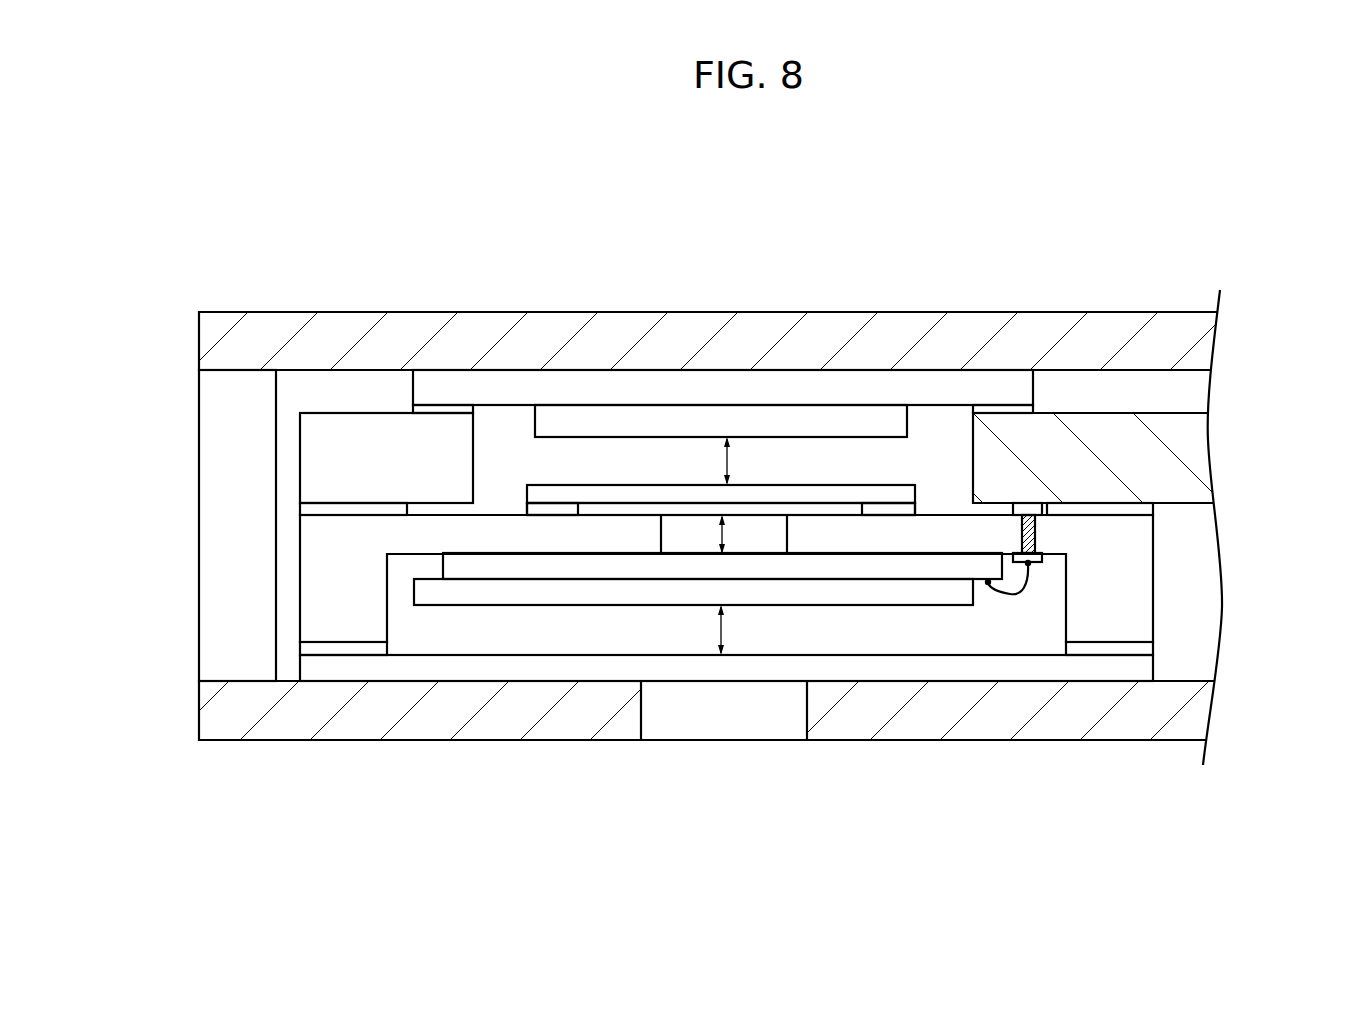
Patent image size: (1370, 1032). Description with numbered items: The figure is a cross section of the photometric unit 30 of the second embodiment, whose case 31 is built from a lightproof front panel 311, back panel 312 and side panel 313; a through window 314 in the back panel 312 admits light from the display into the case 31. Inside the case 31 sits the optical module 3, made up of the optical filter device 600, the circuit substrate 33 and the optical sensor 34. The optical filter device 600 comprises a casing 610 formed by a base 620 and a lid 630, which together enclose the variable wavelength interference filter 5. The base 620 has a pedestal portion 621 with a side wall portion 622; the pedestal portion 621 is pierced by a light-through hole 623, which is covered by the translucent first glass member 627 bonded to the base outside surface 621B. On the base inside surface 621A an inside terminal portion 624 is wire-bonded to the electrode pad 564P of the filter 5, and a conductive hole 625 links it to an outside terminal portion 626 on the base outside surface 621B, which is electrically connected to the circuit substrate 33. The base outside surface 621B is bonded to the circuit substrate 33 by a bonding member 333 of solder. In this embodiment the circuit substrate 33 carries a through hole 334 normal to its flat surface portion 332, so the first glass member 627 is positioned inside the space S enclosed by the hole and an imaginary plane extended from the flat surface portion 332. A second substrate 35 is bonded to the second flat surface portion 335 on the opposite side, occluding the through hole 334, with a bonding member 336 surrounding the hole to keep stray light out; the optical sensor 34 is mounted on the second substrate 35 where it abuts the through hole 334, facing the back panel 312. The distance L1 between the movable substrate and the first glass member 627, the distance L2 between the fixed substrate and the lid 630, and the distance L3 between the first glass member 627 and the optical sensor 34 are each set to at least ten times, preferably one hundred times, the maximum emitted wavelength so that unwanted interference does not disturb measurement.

The vibrator device 30 is at (789, 232).
The case 31 is at (112, 692).
The front panel 311 is at (218, 328).
The back panel 312 is at (207, 707).
The side panel 313 is at (220, 480).
The through window 314 is at (657, 723).
The optical module 3 is at (521, 412).
The circuit substrate 33 is at (1067, 423).
The flat surface portion 332 is at (432, 505).
The bonding member 333 is at (1132, 512).
The through hole 334 is at (476, 433).
The second flat surface portion 335 is at (1107, 413).
The bonding member 336 is at (447, 405).
The optical sensor 34 is at (694, 407).
The second substrate 35 is at (833, 387).
The space S is at (953, 410).
The optical filter device 600 is at (1182, 537).
The casing 610 is at (1282, 608).
The base 620 is at (1147, 617).
The pedestal portion 621 is at (473, 525).
The base inside surface 621A is at (402, 555).
The base outside surface 621B is at (945, 513).
The side wall portion 622 is at (332, 623).
The light-through hole 623 is at (783, 537).
The inside terminal portion 624 is at (1037, 564).
The conductive hole 625 is at (1038, 533).
The outside terminal portion 626 is at (1003, 404).
The first glass member 627 is at (852, 485).
The lid 630 is at (1148, 670).
The variable wavelength interference filter 5 is at (887, 622).
The electrode pad 564P is at (988, 585).
The distance between the movable substrate and the first glass member L1 is at (736, 534).
The distance between the fixed substrate and the lid L2 is at (735, 630).
The distance between the first glass member and the optical sensor L3 is at (740, 461).